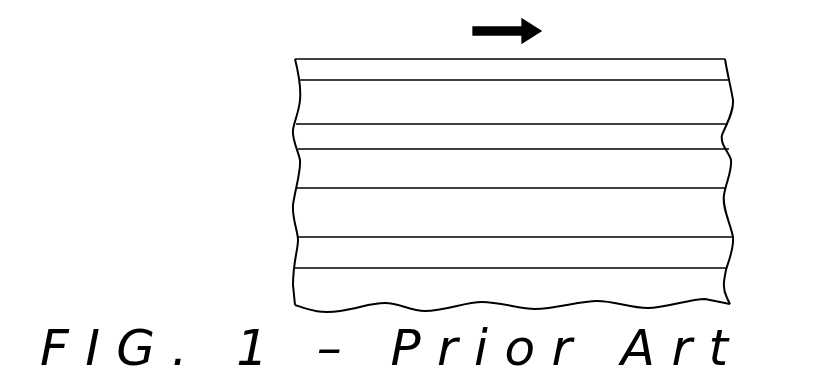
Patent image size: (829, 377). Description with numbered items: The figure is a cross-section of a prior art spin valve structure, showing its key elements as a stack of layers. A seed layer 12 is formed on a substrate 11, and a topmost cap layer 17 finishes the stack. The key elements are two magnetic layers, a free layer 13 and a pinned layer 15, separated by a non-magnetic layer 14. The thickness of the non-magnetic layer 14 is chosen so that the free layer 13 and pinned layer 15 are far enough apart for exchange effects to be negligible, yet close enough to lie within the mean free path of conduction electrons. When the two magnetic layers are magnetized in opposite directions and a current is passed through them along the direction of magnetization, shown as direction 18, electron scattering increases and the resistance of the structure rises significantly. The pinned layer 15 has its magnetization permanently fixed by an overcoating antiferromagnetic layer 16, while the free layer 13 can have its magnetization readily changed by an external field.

The substrate 11 is at (305, 291).
The seed layer 12 is at (305, 252).
The free layer 13 is at (305, 214).
The non-magnetic layer 14 is at (305, 168).
The pinned layer 15 is at (305, 138).
The antiferromagnetic layer 16 is at (305, 107).
The cap layer 17 is at (305, 70).
The current direction 18 is at (507, 21).